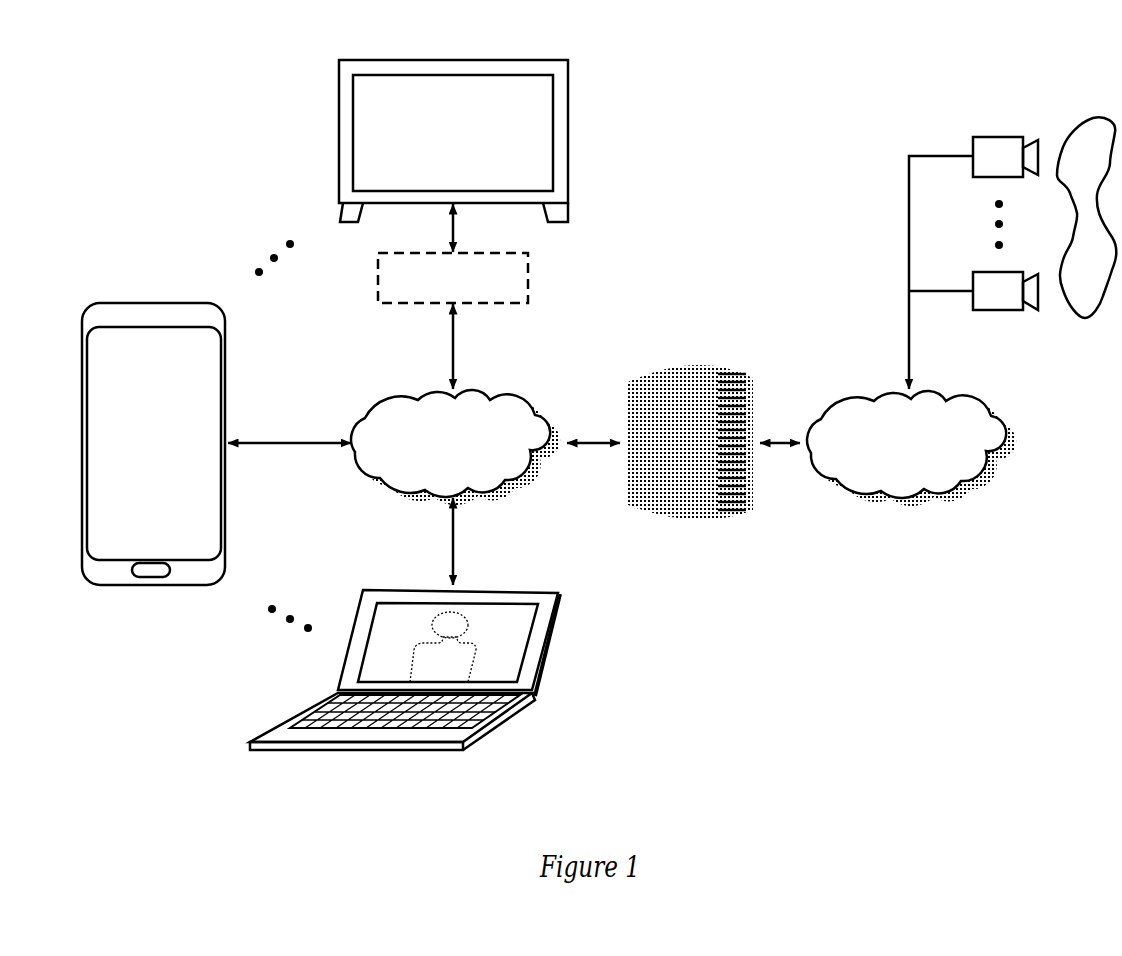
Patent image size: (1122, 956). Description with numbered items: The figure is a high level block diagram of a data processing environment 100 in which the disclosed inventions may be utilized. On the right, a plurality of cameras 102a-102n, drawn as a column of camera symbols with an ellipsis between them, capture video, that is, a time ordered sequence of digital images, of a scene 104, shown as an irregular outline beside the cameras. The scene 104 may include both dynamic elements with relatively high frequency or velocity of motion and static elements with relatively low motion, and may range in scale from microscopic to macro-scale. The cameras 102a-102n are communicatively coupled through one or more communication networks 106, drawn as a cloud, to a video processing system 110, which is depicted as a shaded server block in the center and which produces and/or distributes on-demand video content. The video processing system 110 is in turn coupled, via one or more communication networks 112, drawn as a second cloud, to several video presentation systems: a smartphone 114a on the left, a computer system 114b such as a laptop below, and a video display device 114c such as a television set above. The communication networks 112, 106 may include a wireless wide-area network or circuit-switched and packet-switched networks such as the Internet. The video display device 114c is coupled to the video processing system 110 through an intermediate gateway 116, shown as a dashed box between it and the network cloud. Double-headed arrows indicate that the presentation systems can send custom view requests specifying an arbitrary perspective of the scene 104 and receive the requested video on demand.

The data processing environment 100 is at (740, 170).
The camera 102a is at (985, 136).
The camera 102n is at (985, 271).
The scene 104 is at (1077, 128).
The communication network 106 is at (918, 471).
The video processing system 110 is at (665, 378).
The communication network 112 is at (462, 470).
The smartphone 114a is at (108, 303).
The computer system 114b is at (288, 722).
The video display device 114c is at (385, 60).
The intermediate gateway 116 is at (453, 278).